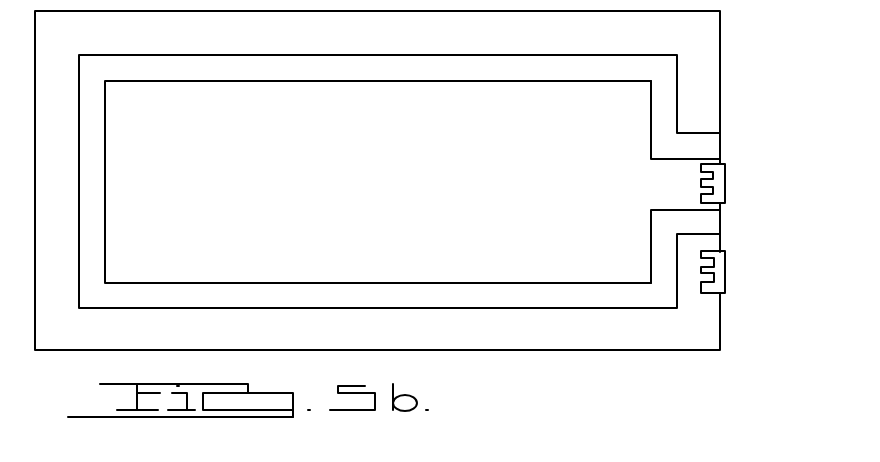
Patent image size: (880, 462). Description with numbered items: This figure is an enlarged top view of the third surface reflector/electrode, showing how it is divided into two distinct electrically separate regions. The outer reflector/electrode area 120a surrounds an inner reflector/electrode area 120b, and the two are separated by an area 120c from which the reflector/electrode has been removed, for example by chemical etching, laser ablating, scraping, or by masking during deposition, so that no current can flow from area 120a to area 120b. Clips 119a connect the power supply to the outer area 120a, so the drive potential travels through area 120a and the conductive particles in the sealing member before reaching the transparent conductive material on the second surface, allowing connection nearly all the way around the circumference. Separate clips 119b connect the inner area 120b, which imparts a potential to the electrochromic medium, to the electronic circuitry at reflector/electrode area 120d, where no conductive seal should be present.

The reflector/electrode area 120a is at (714, 340).
The reflector/electrode area 120b is at (600, 263).
The area devoid of reflector/electrode 120c is at (276, 291).
The reflector/electrode area 120d is at (688, 173).
The clips 119a is at (726, 268).
The clips 119b is at (726, 175).